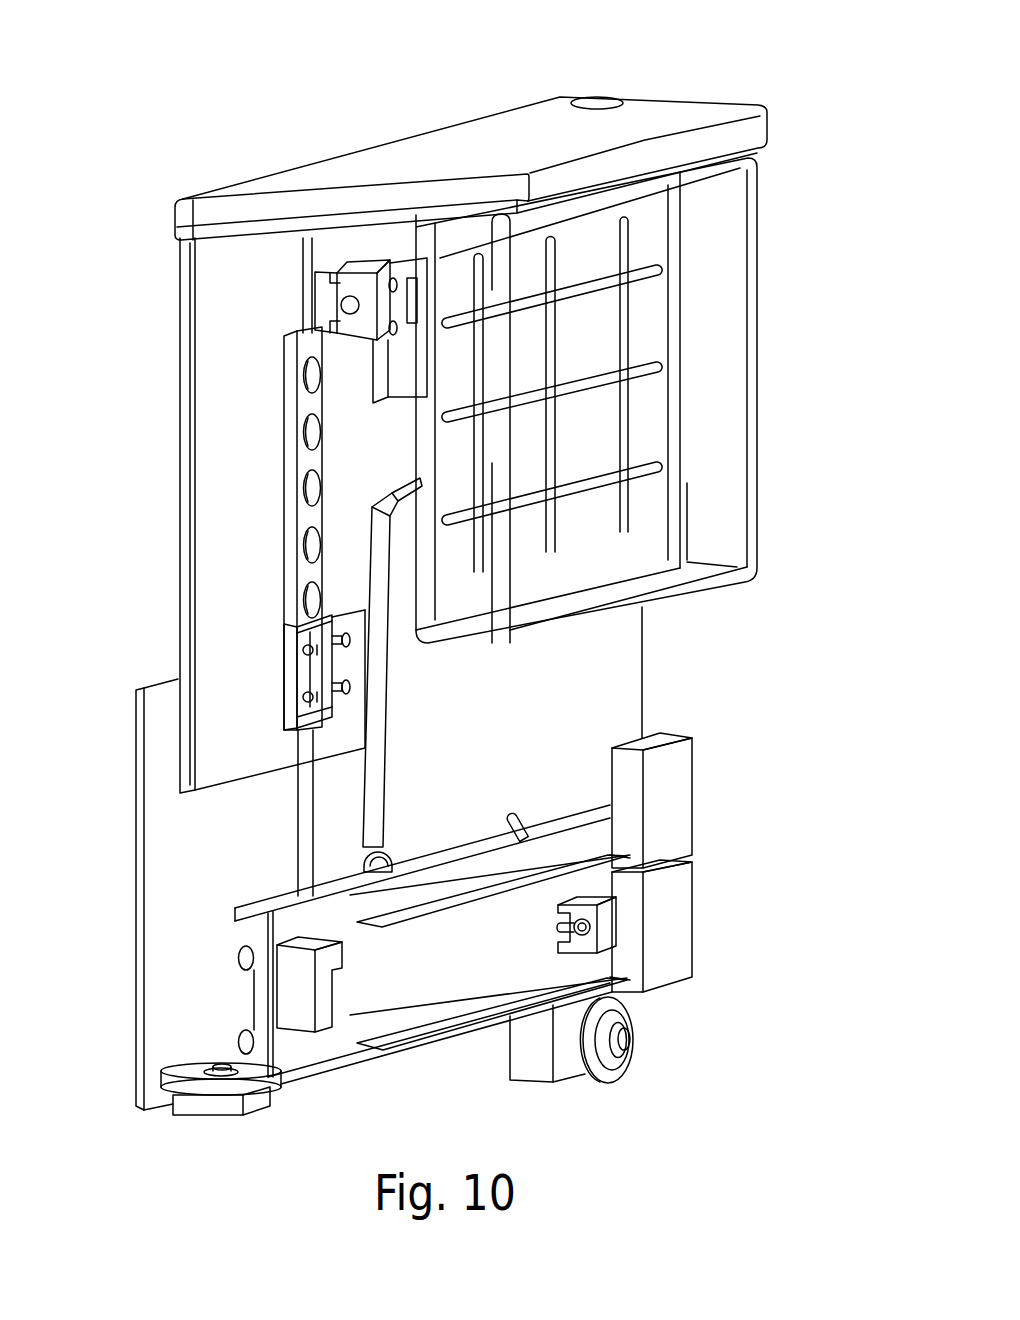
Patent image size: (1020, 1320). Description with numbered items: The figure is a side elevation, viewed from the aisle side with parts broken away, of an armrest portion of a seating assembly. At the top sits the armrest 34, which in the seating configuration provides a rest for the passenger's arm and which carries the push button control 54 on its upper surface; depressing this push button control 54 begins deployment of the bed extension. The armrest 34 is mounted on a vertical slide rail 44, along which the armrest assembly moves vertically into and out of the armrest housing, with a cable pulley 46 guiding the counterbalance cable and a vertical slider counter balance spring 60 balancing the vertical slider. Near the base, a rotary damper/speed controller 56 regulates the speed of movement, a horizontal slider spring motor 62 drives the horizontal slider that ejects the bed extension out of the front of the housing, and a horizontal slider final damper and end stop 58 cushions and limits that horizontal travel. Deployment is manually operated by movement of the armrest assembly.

The armrest 34 is at (694, 110).
The push button control 54 is at (597, 100).
The vertical slide rail 44 is at (307, 460).
The cable pulley 46 is at (248, 1075).
The rotary damper/speed controller 56 is at (617, 1077).
The horizontal slider final damper and end stop 58 is at (618, 940).
The vertical slider counter balance spring 60 is at (672, 918).
The horizontal slider spring motor 62 is at (678, 802).